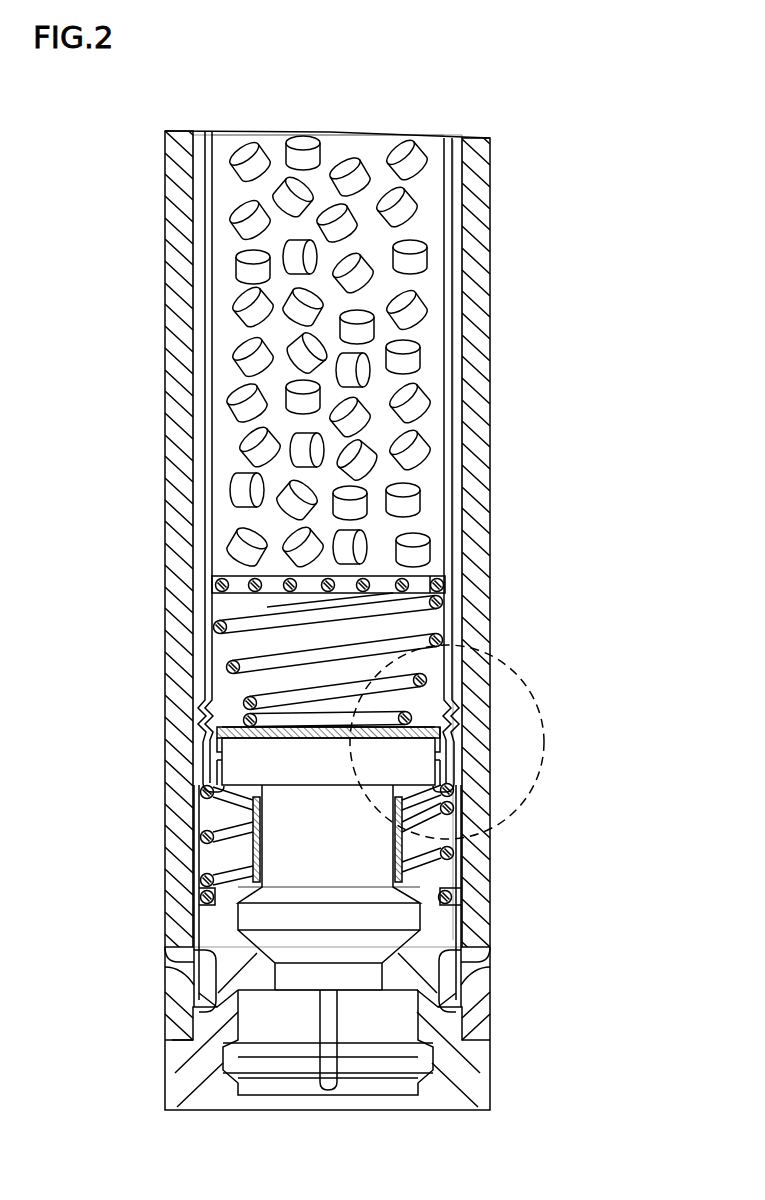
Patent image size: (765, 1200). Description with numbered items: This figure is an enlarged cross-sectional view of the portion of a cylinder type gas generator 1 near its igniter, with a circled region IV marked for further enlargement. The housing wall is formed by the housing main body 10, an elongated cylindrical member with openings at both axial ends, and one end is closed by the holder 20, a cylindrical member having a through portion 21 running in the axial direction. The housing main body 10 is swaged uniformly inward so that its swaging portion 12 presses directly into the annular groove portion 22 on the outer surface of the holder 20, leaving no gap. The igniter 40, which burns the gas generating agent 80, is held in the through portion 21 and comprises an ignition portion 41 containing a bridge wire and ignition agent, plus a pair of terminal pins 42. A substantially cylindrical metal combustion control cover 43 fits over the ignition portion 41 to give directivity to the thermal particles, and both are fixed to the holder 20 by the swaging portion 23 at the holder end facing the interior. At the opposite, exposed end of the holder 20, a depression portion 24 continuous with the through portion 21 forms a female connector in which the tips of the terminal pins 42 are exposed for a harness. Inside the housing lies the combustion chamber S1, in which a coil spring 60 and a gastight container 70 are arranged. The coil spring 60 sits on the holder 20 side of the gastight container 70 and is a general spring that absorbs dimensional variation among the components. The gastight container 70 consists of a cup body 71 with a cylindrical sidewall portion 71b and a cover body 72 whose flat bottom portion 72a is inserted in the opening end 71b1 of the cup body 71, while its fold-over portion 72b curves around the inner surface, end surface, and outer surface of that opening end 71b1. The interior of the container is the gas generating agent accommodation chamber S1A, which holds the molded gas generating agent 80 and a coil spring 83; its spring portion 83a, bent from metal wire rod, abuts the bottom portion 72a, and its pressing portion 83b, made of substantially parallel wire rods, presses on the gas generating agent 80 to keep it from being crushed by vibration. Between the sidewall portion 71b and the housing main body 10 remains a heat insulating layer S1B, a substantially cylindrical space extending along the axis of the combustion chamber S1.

The dispenser 1 is at (529, 122).
The housing main body 10 is at (183, 173).
The swaging portion 12 is at (195, 975).
The holder 20 is at (193, 1070).
The through portion 21 is at (355, 990).
The annular groove portion 22 is at (470, 960).
The swaging portion 23 is at (440, 883).
The depression portion 24 is at (240, 1013).
The igniter 40 is at (270, 773).
The ignition portion 41 is at (318, 855).
The terminal pin 42 is at (330, 1025).
The combustion control cover 43 is at (255, 812).
The coil spring 60 is at (447, 853).
The gastight container 70 is at (93, 746).
The cup body 71 is at (210, 670).
The sidewall portion 71b is at (207, 252).
The opening end 71b1 is at (450, 774).
The cover body 72 is at (215, 743).
The bottom portion 72a is at (315, 734).
The fold-over portion 72b is at (452, 737).
The gas generating agent 80 is at (232, 402).
The coil spring 83 is at (229, 563).
The spring portion 83a is at (277, 610).
The pressing portion 83b is at (365, 576).
The combustion chamber S1 is at (200, 328).
The gas generating agent accommodation chamber S1A is at (432, 217).
The heat insulating layer S1B is at (455, 368).
The detail region IV is at (532, 678).